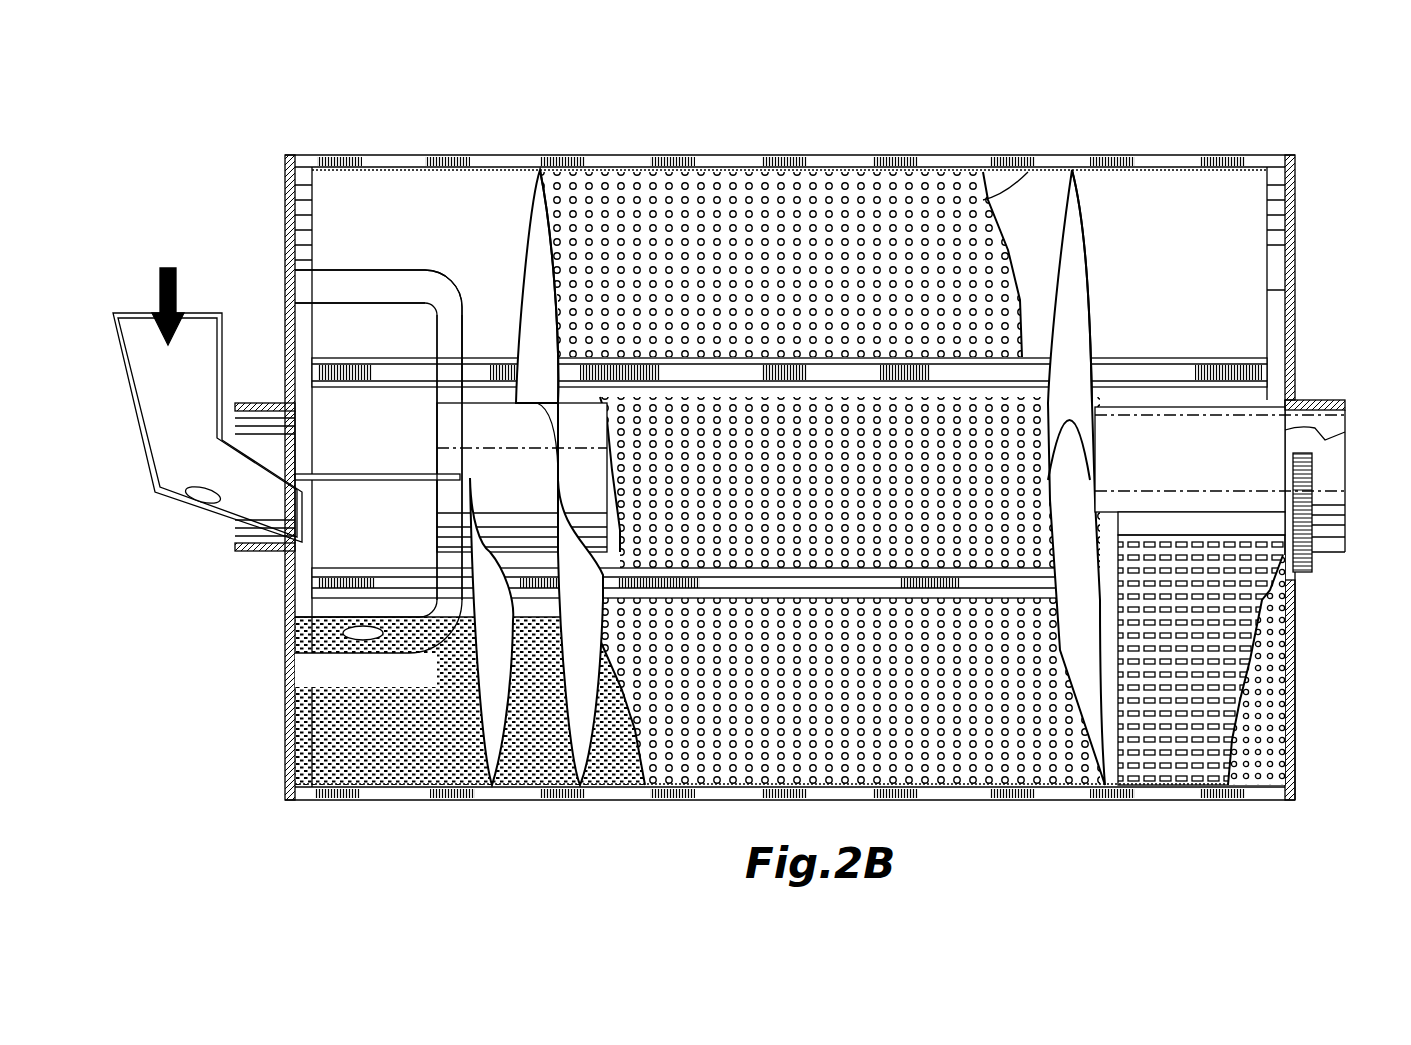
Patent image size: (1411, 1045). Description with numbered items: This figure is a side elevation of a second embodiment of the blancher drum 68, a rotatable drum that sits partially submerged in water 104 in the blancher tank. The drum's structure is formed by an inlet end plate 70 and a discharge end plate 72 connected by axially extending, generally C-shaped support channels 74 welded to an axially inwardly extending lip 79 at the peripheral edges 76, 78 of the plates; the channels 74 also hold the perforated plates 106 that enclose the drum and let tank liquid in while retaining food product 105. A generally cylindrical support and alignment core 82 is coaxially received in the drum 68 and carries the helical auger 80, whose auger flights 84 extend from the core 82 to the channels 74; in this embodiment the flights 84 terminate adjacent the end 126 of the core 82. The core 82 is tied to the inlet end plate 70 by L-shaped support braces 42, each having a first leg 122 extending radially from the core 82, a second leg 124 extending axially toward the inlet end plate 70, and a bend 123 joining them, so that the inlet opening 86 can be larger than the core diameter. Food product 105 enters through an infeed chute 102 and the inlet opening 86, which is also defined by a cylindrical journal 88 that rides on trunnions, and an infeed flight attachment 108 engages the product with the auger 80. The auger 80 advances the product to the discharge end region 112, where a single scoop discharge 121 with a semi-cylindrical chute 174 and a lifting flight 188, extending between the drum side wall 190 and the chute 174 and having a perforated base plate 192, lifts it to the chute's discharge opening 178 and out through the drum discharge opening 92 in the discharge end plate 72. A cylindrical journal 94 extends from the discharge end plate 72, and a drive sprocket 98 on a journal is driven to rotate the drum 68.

The support brace 42 is at (412, 270).
The blancher drum 68 is at (1212, 110).
The inlet end plate 70 is at (288, 712).
The discharge end plate 72 is at (1297, 745).
The support channel 74 is at (1100, 155).
The peripheral edge 76 is at (288, 155).
The peripheral edge 78 is at (1292, 155).
The lip 79 is at (305, 185).
The helical auger 80 is at (532, 238).
The support and alignment core 82 is at (535, 494).
The auger flight 84 is at (530, 208).
The inlet opening 86 is at (305, 450).
The cylindrical journal 88 is at (265, 403).
The drum discharge opening 92 is at (1345, 432).
The cylindrical journal 94 is at (1325, 555).
The drive sprocket 98 is at (1305, 575).
The infeed chute 102 is at (140, 467).
The water 104 is at (385, 762).
The food product 105 is at (203, 503).
The perforated plate 106 is at (1028, 168).
The infeed flight attachment 108 is at (295, 745).
The discharge end region 112 is at (1255, 805).
The single scoop discharge 121 is at (1177, 403).
The first leg 122 is at (458, 325).
The bend 123 is at (440, 278).
The second leg 124 is at (340, 285).
The end of the support core 126 is at (437, 510).
The semi-cylindrical chute 174 is at (1220, 472).
The discharge opening 178 is at (1345, 505).
The lifting flight 188 is at (1178, 792).
The side wall 190 is at (1120, 790).
The perforated base plate 192 is at (1210, 672).